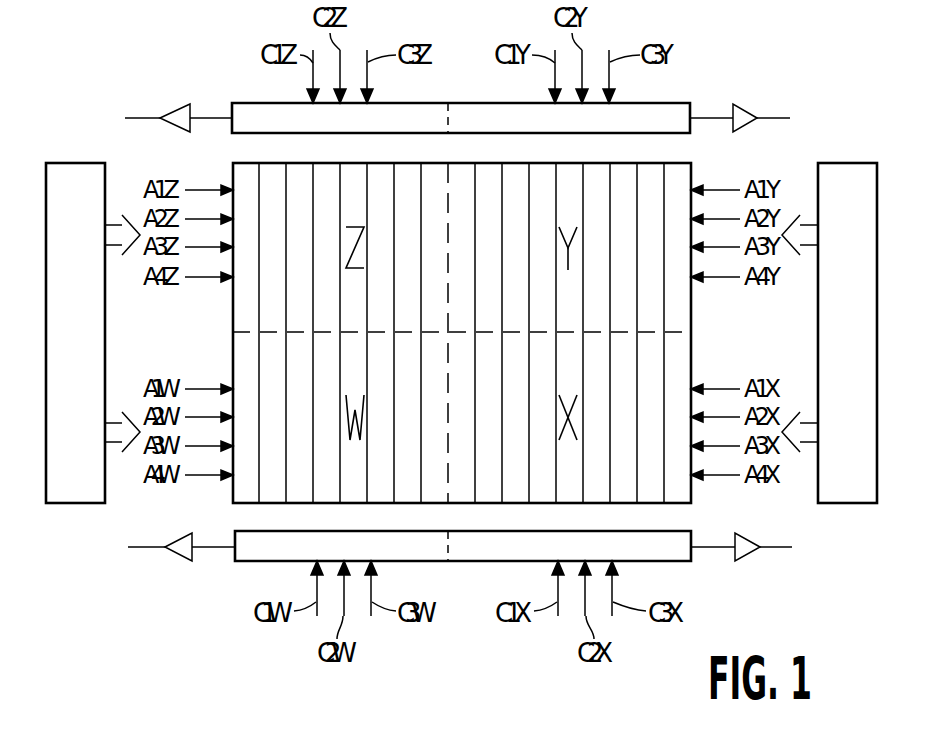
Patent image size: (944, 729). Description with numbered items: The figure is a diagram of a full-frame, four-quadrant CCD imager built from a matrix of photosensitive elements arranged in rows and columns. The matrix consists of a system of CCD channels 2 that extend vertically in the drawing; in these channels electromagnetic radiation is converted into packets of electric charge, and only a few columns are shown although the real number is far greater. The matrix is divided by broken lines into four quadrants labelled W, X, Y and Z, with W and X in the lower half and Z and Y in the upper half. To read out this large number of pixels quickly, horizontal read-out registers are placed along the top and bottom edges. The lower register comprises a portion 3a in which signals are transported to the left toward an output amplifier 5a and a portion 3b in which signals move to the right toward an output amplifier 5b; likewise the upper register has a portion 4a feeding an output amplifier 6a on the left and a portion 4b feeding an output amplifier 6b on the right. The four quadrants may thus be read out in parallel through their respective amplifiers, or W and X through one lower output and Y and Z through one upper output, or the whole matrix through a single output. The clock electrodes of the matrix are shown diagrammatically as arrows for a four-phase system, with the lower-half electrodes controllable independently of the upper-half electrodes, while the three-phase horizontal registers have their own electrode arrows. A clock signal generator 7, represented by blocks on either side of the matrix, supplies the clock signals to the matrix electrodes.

The CCD channels 2 is at (620, 482).
The portion a of horizontal read-out register 3a is at (240, 548).
The portion b of horizontal read-out register 3b is at (686, 547).
The portion a of horizontal read-out register 4a is at (238, 108).
The portion b of horizontal read-out register 4b is at (684, 110).
The output amplifier 5a is at (180, 550).
The output amplifier 5b is at (748, 548).
The output amplifier 6a is at (178, 107).
The output amplifier 6b is at (740, 107).
The clock signal generator 7 is at (70, 175).